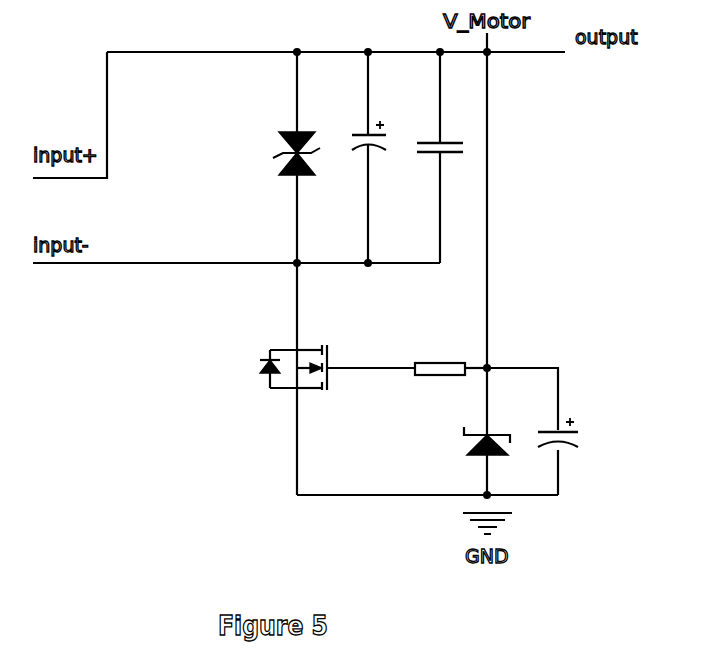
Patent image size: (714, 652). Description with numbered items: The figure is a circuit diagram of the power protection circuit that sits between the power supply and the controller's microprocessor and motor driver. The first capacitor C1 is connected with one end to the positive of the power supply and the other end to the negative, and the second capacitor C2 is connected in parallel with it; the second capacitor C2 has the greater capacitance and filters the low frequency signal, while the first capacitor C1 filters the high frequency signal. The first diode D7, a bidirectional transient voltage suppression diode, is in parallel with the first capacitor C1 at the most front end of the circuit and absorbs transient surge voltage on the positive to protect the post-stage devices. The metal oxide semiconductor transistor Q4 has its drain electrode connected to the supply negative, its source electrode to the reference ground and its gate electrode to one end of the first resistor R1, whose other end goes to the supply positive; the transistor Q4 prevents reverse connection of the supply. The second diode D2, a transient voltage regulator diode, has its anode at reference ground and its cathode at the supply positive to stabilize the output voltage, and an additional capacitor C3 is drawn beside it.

The first diode D7 is at (278, 146).
The second capacitor C2 is at (356, 157).
The first capacitor C1 is at (446, 157).
The metal oxide semiconductor transistor Q4 is at (332, 352).
The first resistor R1 is at (450, 354).
The second diode D2 is at (497, 431).
The electrolytic capacitor C3 is at (574, 430).